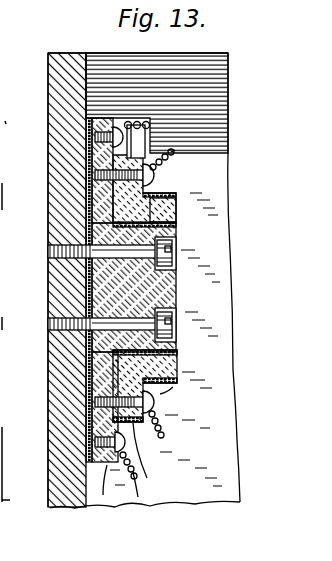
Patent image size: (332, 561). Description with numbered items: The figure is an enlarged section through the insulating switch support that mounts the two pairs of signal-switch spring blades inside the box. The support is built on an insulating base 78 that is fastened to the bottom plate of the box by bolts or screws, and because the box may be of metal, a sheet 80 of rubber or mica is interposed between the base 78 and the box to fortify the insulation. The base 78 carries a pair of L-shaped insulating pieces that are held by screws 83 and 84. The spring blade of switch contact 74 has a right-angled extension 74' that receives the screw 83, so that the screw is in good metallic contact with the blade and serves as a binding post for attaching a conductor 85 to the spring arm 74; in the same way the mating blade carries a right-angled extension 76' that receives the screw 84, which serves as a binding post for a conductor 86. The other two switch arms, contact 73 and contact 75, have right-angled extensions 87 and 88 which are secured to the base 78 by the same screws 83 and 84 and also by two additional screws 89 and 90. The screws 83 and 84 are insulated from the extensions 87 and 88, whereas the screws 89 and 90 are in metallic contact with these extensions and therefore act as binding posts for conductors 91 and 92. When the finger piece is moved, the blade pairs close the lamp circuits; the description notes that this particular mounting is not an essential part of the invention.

The switch contact 73 is at (177, 355).
The switch contact 74 is at (184, 398).
The right-angled extension 74' is at (146, 462).
The switch contact 75 is at (230, 223).
The right-angled extension 76' is at (177, 106).
The insulating base 78 is at (107, 282).
The sheet of rubber or mica 80 is at (93, 172).
The screw 83 is at (157, 405).
The screw 84 is at (155, 173).
The conductor 85 is at (163, 437).
The conductor 86 is at (175, 150).
The right-angled extension 87 is at (115, 363).
The right-angled extension 88 is at (93, 205).
The screw 89 is at (92, 443).
The screw 90 is at (92, 140).
The conductor 91 is at (138, 497).
The conductor 92 is at (128, 120).